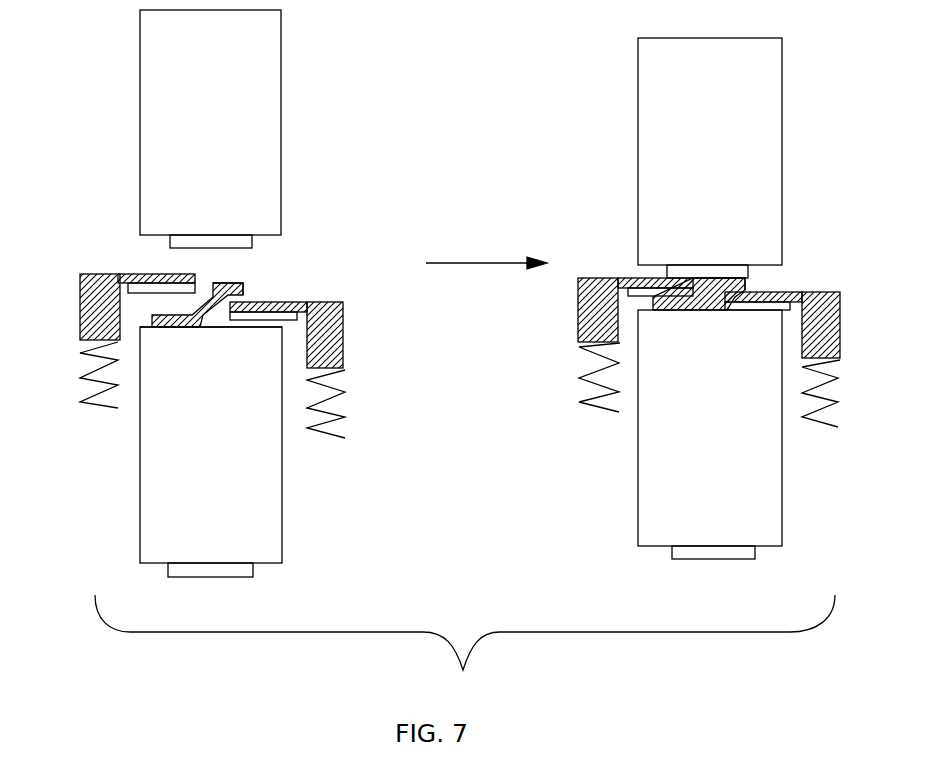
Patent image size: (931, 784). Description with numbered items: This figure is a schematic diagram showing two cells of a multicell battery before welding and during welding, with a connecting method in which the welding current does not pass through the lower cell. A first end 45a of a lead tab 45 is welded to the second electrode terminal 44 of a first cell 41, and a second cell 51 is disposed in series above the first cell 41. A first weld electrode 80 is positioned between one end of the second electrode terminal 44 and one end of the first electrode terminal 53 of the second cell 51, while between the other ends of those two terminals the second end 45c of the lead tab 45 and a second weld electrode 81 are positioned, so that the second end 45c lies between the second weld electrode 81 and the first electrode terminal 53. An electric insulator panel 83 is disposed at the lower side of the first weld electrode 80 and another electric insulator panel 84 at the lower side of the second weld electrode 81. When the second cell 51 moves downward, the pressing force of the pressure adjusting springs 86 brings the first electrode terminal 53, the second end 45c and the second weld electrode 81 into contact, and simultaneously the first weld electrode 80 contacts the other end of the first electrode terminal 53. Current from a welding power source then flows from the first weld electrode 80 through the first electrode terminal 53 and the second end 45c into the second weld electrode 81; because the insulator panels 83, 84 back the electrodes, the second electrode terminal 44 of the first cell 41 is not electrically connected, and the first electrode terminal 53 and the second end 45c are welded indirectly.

The first cell 41 is at (267, 528).
The second electrode terminal 44 is at (243, 327).
The lead tab 45 is at (233, 283).
The first end 45a is at (120, 278).
The second end 45c is at (248, 290).
The second cell 51 is at (257, 78).
The first electrode terminal 53 is at (185, 243).
The first weld electrode 80 is at (80, 303).
The second weld electrode 81 is at (343, 340).
The electric insulator panel 83 is at (155, 288).
The electric insulator panel 84 is at (300, 302).
The pressure adjusting springs 86 is at (585, 387).